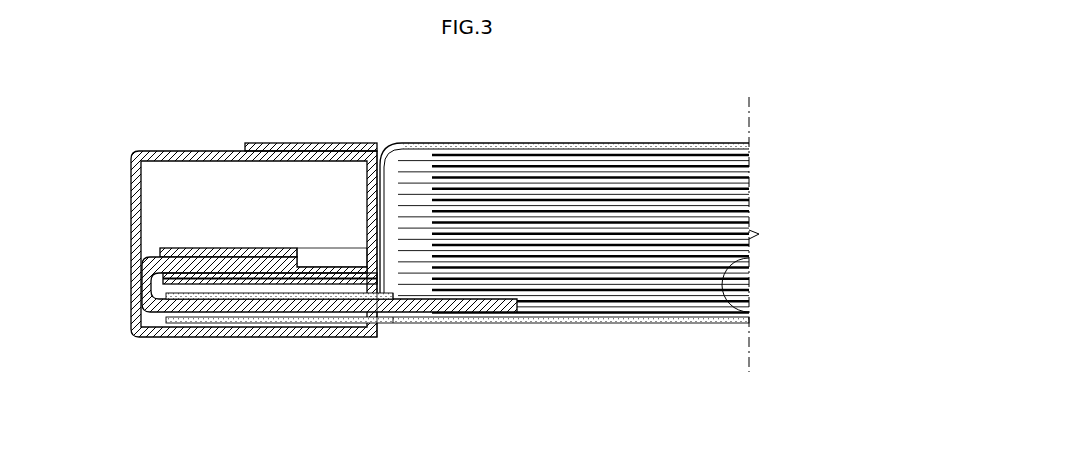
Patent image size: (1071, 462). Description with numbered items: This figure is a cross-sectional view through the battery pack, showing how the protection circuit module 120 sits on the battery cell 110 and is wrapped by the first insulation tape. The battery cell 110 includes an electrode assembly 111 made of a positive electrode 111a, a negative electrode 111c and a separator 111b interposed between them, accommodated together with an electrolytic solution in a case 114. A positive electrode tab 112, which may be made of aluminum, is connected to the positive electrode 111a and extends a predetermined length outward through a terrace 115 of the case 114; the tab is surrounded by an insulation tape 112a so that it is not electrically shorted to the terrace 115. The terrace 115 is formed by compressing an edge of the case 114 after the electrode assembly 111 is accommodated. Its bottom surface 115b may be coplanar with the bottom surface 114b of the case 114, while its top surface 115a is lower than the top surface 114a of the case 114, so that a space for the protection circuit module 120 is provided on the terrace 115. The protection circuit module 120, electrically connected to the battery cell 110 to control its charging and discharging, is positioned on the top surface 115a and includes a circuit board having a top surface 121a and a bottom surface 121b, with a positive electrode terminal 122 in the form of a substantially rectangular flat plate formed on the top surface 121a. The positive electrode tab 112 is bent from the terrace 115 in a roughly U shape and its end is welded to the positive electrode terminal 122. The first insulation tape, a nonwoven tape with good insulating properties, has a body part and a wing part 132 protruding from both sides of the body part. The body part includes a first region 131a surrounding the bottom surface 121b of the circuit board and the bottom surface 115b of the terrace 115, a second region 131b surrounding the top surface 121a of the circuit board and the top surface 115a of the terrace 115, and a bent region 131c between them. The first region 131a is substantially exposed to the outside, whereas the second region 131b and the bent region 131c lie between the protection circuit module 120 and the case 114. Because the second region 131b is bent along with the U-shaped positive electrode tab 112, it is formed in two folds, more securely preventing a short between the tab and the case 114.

The battery cell 110 is at (447, 224).
The electrode assembly 111 is at (648, 239).
The positive electrode 111a is at (736, 309).
The separator 111b is at (736, 286).
The negative electrode 111c is at (736, 264).
The positive electrode tab 112 is at (160, 313).
The insulation tape 112a is at (396, 298).
The case 114 is at (457, 189).
The top surface of the case 114a is at (515, 143).
The bottom surface of the case 114b is at (602, 326).
The terrace 115 is at (331, 353).
The top surface of the terrace 115a is at (291, 291).
The bottom surface of the terrace 115b is at (273, 392).
The protection circuit module 120 is at (307, 173).
The top surface of the circuit board 121a is at (140, 255).
The bottom surface of the circuit board 121b is at (166, 160).
The positive electrode terminal 122 is at (323, 252).
The first region 131a is at (131, 200).
The second region 131b is at (131, 282).
The bent region 131c is at (386, 207).
The wing part 132 is at (257, 142).